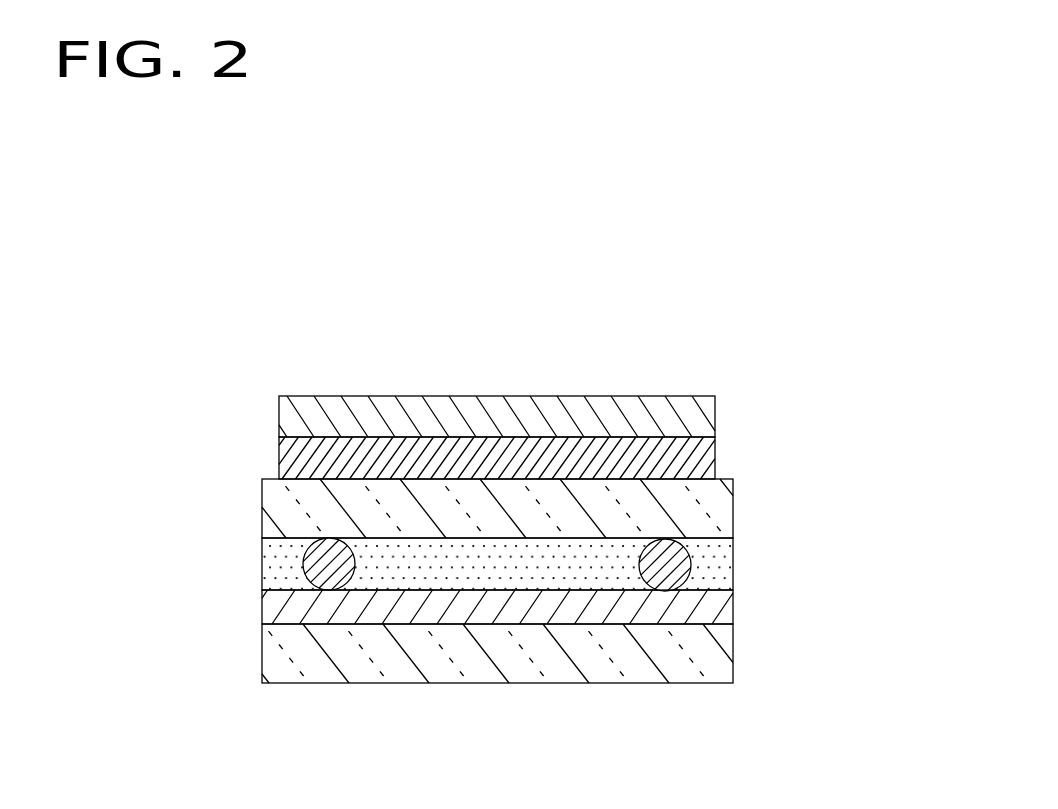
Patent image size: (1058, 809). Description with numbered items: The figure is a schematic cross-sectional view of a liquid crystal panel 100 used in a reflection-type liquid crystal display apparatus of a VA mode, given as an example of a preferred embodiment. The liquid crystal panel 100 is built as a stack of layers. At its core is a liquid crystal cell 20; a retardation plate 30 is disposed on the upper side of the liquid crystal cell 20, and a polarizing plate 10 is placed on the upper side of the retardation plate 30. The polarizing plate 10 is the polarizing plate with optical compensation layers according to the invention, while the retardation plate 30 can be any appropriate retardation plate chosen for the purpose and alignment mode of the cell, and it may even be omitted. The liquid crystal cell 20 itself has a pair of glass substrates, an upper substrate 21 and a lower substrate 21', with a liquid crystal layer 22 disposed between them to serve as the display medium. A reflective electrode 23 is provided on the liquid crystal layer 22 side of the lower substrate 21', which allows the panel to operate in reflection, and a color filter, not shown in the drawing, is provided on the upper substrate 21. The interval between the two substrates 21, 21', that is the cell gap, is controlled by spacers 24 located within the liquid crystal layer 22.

The liquid crystal panel 100 is at (797, 286).
The polarizing plate 10 is at (702, 418).
The retardation plate 30 is at (703, 458).
The liquid crystal cell 20 is at (242, 482).
The upper glass substrate 21 is at (550, 508).
The spacers 24 is at (670, 568).
The liquid crystal layer 22 is at (577, 568).
The reflective electrode 23 is at (717, 608).
The lower glass substrate 21' is at (556, 656).